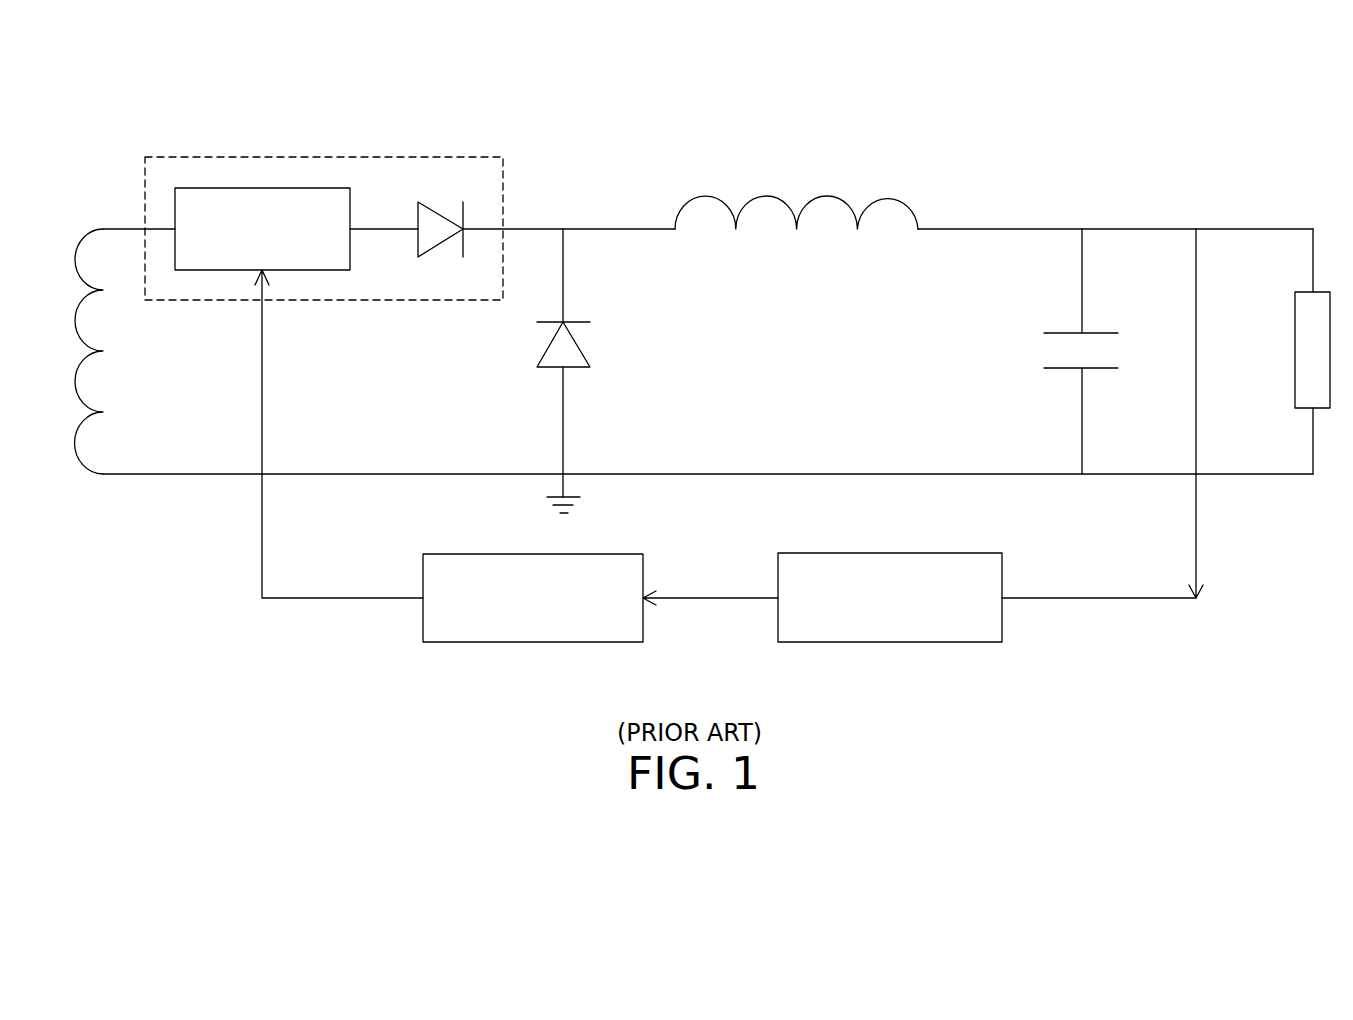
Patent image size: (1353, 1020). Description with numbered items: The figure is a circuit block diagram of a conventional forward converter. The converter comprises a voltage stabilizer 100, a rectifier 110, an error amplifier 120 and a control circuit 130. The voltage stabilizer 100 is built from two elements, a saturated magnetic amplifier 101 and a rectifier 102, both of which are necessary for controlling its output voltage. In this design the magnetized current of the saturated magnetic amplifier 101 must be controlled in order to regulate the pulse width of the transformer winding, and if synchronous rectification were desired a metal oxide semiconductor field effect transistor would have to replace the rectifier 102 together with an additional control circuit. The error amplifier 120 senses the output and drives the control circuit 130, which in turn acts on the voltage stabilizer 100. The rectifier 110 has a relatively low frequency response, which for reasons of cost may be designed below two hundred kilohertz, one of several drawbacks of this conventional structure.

The voltage stabilizer 100 is at (345, 157).
The saturated magnetic amplifier 101 is at (222, 188).
The rectifier 102 is at (437, 202).
The rectifier 110 is at (577, 343).
The error amplifier 120 is at (888, 643).
The control circuit 130 is at (522, 643).